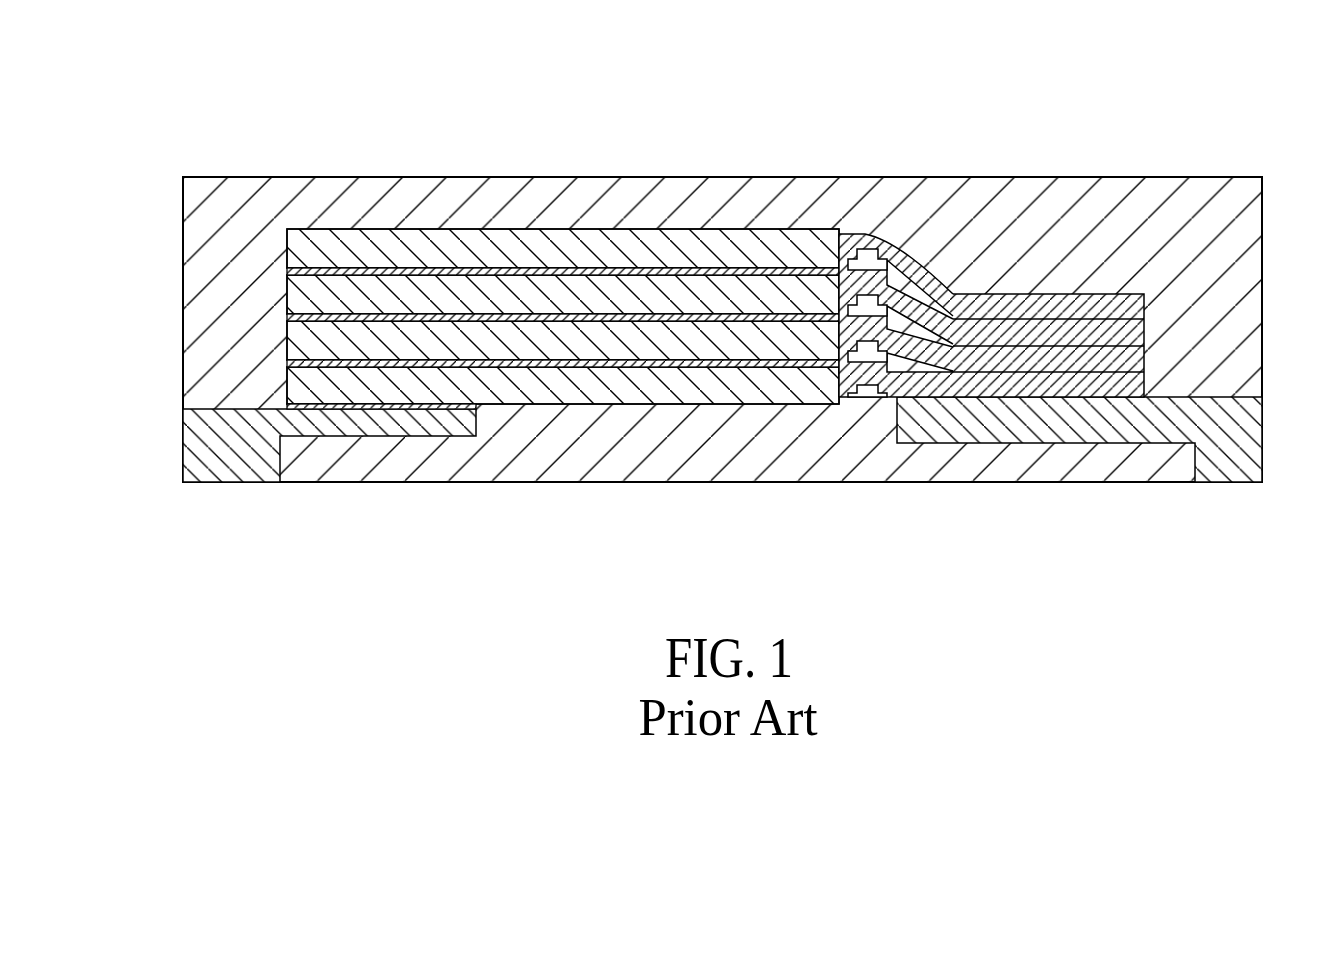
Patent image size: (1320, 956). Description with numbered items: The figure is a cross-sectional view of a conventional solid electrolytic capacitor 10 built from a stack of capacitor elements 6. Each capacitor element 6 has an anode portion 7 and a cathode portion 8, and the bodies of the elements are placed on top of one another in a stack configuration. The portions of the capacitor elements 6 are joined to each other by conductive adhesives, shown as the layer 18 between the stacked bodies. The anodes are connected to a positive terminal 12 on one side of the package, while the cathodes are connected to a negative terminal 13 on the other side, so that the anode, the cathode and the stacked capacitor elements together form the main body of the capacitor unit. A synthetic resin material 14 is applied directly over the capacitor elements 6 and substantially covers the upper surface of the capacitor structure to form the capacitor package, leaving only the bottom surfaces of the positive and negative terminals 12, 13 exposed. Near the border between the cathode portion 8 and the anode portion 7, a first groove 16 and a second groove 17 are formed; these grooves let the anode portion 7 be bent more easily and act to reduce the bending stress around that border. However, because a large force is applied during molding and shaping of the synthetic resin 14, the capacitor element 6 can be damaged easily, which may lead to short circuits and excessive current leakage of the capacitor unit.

The solid electrolytic capacitor 10 is at (228, 148).
The synthetic resin material 14 is at (196, 242).
The capacitor element 6 is at (286, 262).
The cathode portion 8 is at (752, 257).
The conductive adhesive layer 18 is at (562, 275).
The first groove 16 is at (858, 385).
The second groove 17 is at (912, 382).
The anode portion 7 is at (1063, 312).
The negative terminal 13 is at (219, 468).
The positive terminal 12 is at (1226, 468).